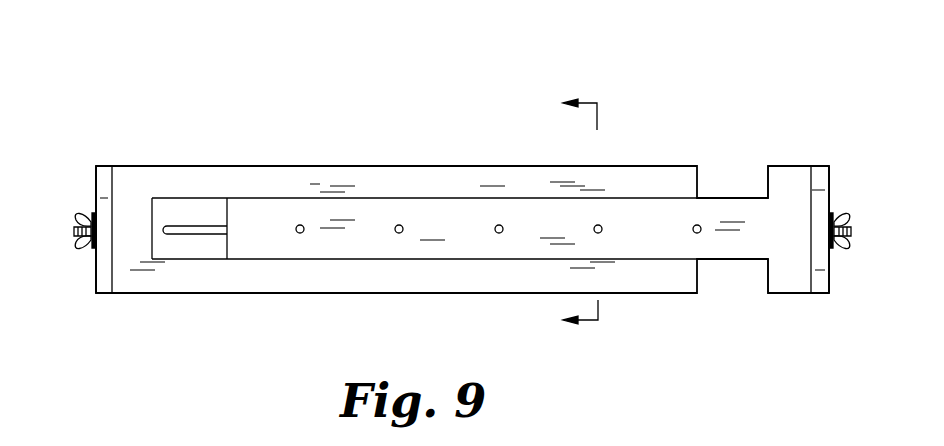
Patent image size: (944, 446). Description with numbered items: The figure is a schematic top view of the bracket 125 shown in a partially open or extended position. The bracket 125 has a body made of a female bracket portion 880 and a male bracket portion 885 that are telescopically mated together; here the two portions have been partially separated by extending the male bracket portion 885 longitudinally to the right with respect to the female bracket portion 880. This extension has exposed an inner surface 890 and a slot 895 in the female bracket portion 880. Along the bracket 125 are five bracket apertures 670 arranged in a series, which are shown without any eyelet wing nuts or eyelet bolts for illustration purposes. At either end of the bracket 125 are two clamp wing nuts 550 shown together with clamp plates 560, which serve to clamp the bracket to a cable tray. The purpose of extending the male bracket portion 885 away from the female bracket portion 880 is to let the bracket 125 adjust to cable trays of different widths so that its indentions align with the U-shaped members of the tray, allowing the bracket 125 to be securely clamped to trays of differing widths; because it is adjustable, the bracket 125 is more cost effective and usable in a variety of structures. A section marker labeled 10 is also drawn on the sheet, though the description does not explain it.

The bracket 125 is at (368, 106).
The female bracket portion 880 is at (402, 293).
The inner surface 890 is at (195, 214).
The slot 895 is at (185, 228).
The bracket apertures 670 is at (299, 225).
The clamp plates 560 is at (96, 284).
The male bracket portion 885 is at (782, 293).
The clamp wing nuts 550 is at (78, 212).
The section line 10 is at (585, 213).